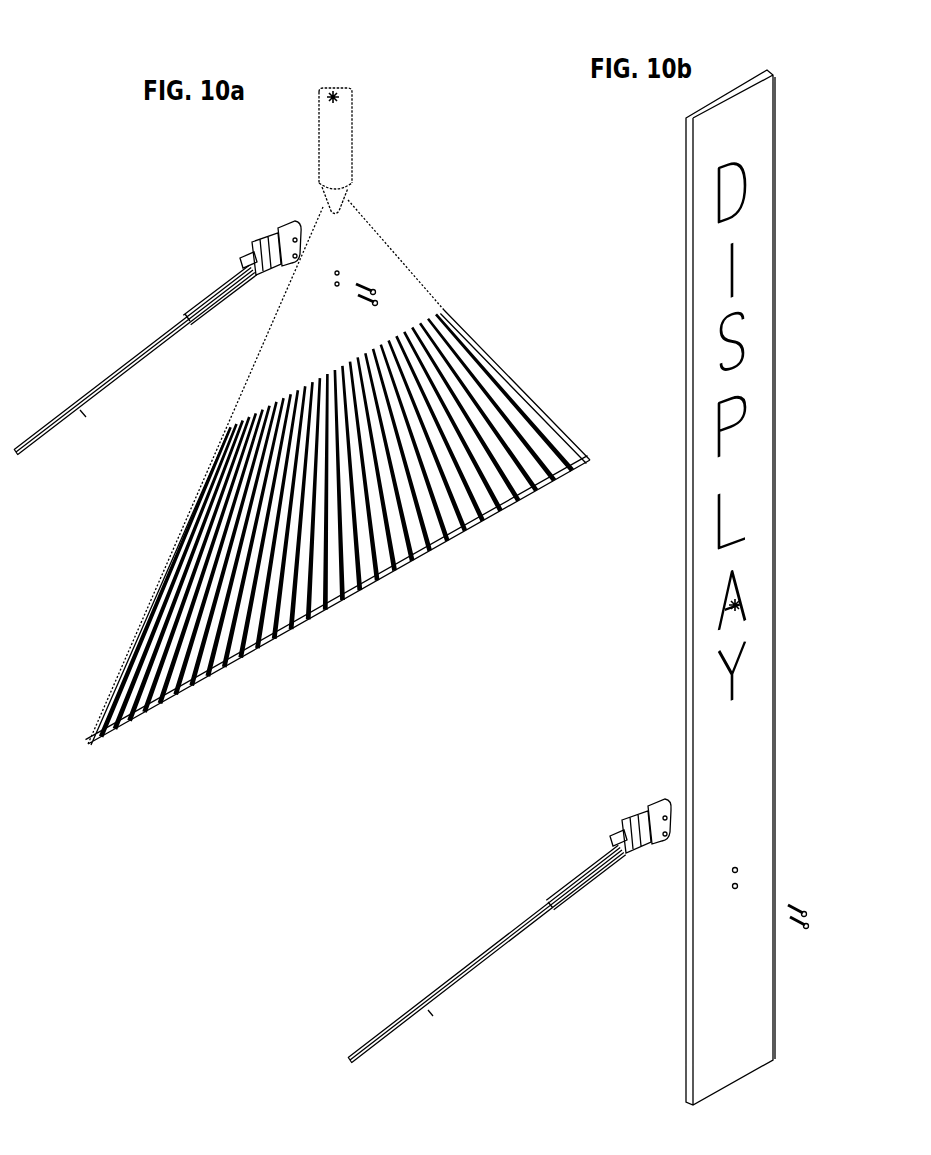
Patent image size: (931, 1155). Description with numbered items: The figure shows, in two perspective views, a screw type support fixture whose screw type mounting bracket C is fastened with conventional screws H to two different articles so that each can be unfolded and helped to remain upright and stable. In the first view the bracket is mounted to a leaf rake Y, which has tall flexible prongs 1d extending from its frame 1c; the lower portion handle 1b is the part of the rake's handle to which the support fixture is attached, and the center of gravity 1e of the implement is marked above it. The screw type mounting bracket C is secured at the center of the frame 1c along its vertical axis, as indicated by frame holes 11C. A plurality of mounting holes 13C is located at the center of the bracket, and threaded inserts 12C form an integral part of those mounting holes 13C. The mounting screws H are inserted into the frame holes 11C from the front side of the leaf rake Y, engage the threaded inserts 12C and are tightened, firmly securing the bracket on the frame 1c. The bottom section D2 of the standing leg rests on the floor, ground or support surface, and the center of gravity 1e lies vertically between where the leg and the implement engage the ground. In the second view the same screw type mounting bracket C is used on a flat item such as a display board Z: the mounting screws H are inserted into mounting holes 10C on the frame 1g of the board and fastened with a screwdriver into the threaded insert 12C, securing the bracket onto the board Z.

In FIG. 10A, the leaf rake Y is at (323, 83).
In FIG. 10B, the display board Z is at (775, 88).
In FIG. 10A, the lower portion handle 1b is at (367, 130).
In FIG. 10A, the frame 1c is at (428, 300).
In FIG. 10A, the tall flexible prongs 1d is at (340, 568).
In FIG. 10A, the center of gravity 1e is at (348, 97).
In FIG. 10B, the center of gravity 1e is at (745, 605).
In FIG. 10B, the frame 1g is at (700, 1047).
In FIG. 10A, the screw type mounting bracket C is at (278, 233).
In FIG. 10B, the screw type mounting bracket C is at (633, 808).
In FIG. 10A, the threaded insert 12C is at (272, 237).
In FIG. 10B, the threaded insert 12C is at (652, 815).
In FIG. 10A, the mounting holes 13C is at (280, 262).
In FIG. 10B, the mounting holes 13C is at (663, 842).
In FIG. 10A, the frame holes 11C is at (348, 273).
In FIG. 10B, the mounting holes 10C is at (738, 877).
In FIG. 10A, the screws H is at (378, 290).
In FIG. 10B, the screws H is at (803, 917).
In FIG. 10A, the bottom section D2 is at (18, 455).
In FIG. 10B, the bottom section D2 is at (343, 1048).